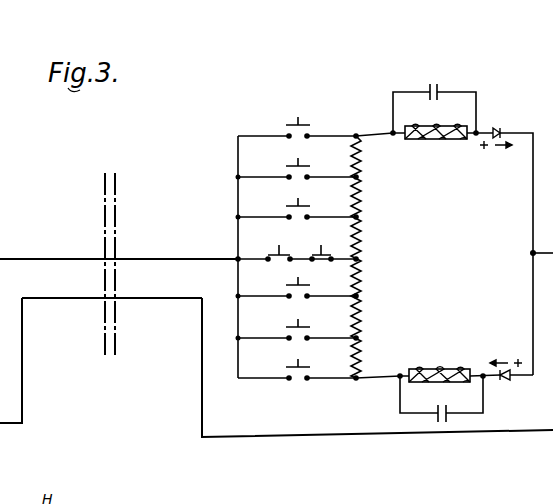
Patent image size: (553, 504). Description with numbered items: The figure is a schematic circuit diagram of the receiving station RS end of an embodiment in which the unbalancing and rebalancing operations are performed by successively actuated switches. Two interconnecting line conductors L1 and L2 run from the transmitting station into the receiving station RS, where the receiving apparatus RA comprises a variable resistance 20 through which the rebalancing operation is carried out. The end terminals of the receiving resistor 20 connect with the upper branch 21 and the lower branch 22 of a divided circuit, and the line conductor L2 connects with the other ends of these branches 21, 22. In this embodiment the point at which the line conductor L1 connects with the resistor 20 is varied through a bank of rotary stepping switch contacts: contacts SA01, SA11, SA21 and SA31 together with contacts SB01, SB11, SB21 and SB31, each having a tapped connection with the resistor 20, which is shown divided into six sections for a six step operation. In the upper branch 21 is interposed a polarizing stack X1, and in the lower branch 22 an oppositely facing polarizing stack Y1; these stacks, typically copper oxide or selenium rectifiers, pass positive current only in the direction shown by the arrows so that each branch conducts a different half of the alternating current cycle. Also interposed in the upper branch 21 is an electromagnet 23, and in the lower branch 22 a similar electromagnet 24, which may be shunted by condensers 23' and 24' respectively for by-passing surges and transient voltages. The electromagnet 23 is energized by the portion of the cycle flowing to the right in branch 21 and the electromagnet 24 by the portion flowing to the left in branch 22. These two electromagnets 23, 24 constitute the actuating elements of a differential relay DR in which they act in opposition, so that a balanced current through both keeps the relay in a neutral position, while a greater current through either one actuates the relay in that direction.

The variable resistance 20 is at (362, 226).
The upper branch 21 is at (377, 137).
The lower branch 22 is at (361, 380).
The electromagnet 23 is at (436, 150).
The condenser 23' is at (434, 93).
The electromagnet 24 is at (439, 360).
The condenser 24' is at (441, 424).
The line conductor L1 is at (82, 259).
The line conductor L2 is at (90, 298).
The receiving station RS is at (348, 112).
The receiving apparatus RA is at (396, 269).
The differential relay DR is at (397, 392).
The polarizing stack X1 is at (497, 128).
The polarizing stack Y1 is at (501, 381).
The rotary stepping switch contact SB31 is at (297, 126).
The rotary stepping switch contact SB21 is at (297, 167).
The rotary stepping switch contact SB11 is at (297, 207).
The rotary stepping switch contact SA01 is at (275, 251).
The rotary stepping switch contact SB01 is at (332, 251).
The rotary stepping switch contact SA11 is at (297, 286).
The rotary stepping switch contact SA21 is at (297, 328).
The rotary stepping switch contact SA31 is at (297, 368).